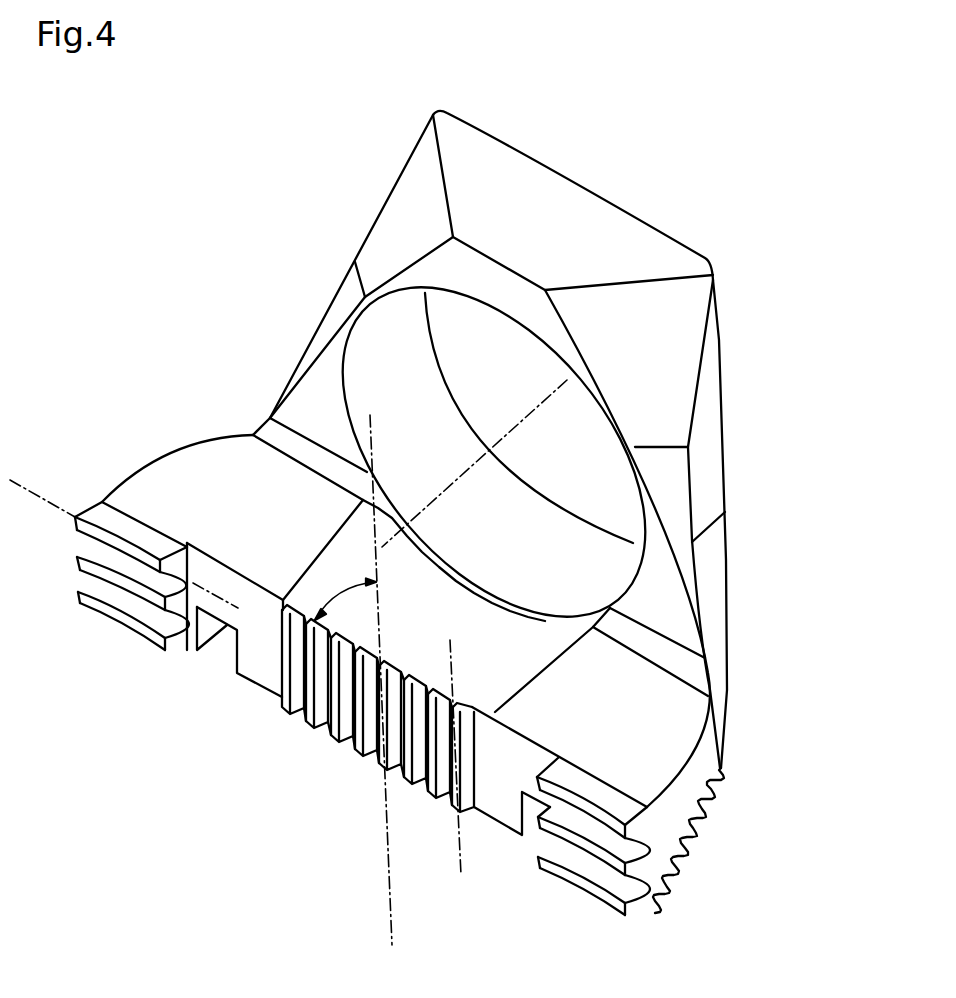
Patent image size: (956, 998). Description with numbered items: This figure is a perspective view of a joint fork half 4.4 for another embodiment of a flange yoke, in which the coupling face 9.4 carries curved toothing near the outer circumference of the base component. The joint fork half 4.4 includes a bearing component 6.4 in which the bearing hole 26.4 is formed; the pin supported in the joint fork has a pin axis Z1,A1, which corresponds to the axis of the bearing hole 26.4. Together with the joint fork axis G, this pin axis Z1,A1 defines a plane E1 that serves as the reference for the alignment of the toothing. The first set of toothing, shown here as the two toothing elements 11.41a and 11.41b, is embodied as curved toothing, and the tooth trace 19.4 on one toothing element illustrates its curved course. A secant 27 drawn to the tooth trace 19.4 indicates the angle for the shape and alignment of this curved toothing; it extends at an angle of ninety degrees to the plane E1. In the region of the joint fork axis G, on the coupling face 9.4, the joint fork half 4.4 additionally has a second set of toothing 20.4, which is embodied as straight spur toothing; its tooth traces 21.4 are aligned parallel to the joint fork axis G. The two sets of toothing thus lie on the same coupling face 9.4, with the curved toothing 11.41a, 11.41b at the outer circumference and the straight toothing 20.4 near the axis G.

The bearing component 6.4 is at (752, 336).
The joint fork half 4.4 is at (530, 187).
The bearing hole 26.4 is at (513, 334).
The plane E1 is at (455, 495).
The pin axis and bearing hole axis Z1,A1 is at (527, 420).
The tooth trace 19.4 is at (108, 517).
The secant 27 is at (40, 495).
The first set of toothing 11.41a is at (123, 613).
The coupling face 9.4 is at (252, 682).
The second set of toothing 20.4 is at (378, 770).
The tooth traces 21.4 is at (462, 858).
The joint fork axis G is at (398, 918).
The first set of toothing 11.41b is at (608, 878).